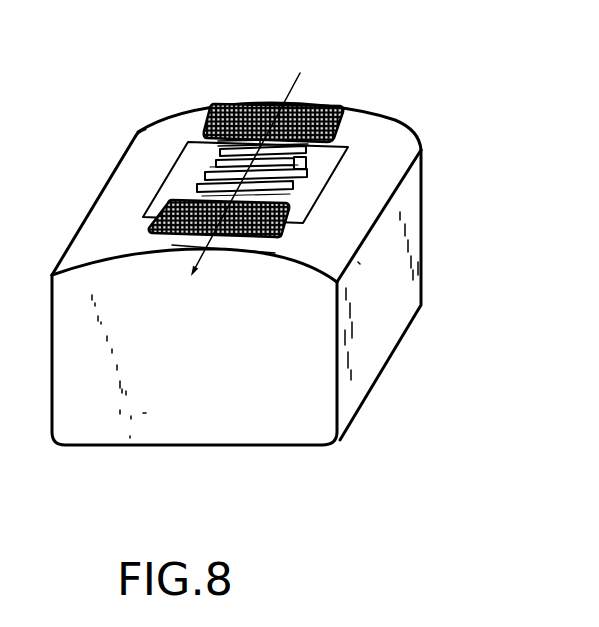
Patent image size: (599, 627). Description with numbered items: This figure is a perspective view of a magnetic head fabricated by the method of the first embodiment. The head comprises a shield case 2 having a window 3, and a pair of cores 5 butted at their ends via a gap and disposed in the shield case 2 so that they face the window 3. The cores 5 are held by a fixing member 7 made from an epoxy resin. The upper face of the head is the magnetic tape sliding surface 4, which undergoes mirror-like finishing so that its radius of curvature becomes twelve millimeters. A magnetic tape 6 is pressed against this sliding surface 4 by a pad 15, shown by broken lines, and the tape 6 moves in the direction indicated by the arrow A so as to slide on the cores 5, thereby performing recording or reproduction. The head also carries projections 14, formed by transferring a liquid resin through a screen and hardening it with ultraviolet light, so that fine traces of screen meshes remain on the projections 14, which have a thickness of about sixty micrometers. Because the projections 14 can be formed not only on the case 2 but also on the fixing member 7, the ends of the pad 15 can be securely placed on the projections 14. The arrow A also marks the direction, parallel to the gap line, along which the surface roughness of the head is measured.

The shield case 2 is at (423, 273).
The window 3 is at (333, 178).
The magnetic tape sliding surface 4 is at (380, 153).
The magnetic core 5 is at (202, 178).
The magnetic tape 6 is at (221, 151).
The fixing member 7 is at (307, 200).
The projections 14 is at (328, 103).
The pad 15 is at (250, 101).
The arrow A is at (239, 190).